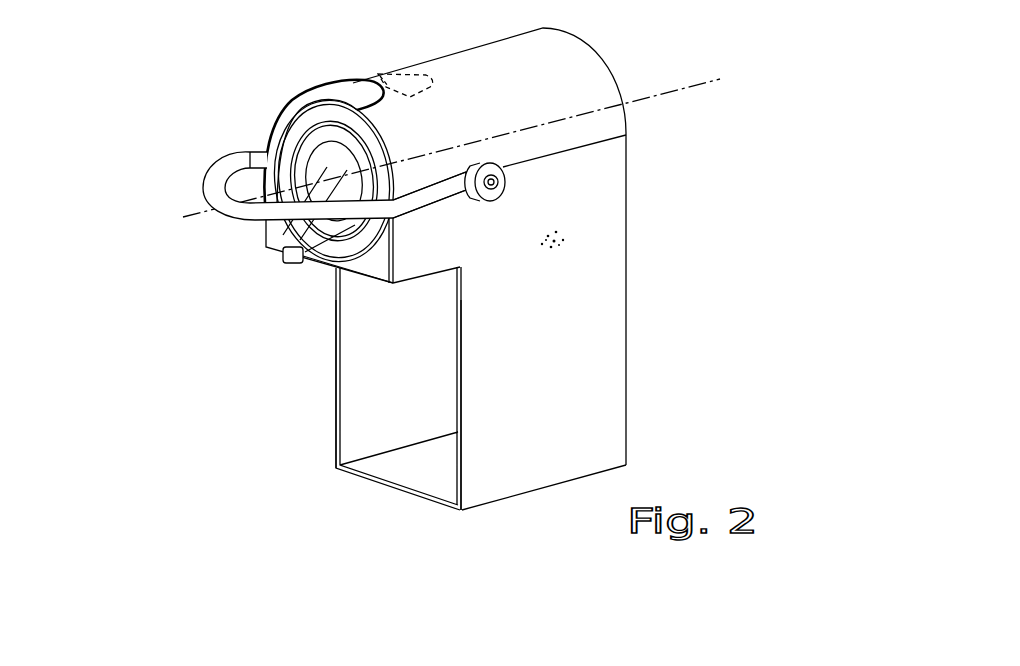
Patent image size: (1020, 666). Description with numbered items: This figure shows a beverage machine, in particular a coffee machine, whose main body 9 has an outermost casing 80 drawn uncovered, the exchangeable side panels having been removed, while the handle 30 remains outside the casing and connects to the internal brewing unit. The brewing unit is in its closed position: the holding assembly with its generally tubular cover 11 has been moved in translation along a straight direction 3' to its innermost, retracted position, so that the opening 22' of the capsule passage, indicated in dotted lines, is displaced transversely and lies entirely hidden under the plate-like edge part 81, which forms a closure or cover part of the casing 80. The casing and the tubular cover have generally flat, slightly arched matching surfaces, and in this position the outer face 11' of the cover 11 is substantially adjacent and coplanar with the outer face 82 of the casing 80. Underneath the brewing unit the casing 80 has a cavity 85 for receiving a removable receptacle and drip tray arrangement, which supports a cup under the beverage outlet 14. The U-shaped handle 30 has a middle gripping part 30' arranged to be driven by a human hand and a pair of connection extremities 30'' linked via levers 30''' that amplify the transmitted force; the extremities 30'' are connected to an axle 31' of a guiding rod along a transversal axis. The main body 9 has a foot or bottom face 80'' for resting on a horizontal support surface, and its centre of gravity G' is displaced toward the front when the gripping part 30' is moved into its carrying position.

The outermost casing 80 is at (462, 255).
The bottom face 80'' is at (336, 282).
The plate-like edge part 81 is at (410, 80).
The outer face 82 is at (377, 268).
The cavity 85 is at (352, 389).
The tubular cover 11 is at (333, 146).
The outer face 11' is at (304, 124).
The handle 30 is at (315, 156).
The middle gripping part 30' is at (263, 220).
The connection extremities 30'' is at (535, 183).
The levers 30''' is at (431, 215).
The axle 31' is at (503, 210).
The beverage outlet 14 is at (285, 262).
The opening 22' is at (436, 96).
The direction 3' is at (430, 148).
The main body 9 is at (662, 148).
The centre of gravity G' is at (576, 279).